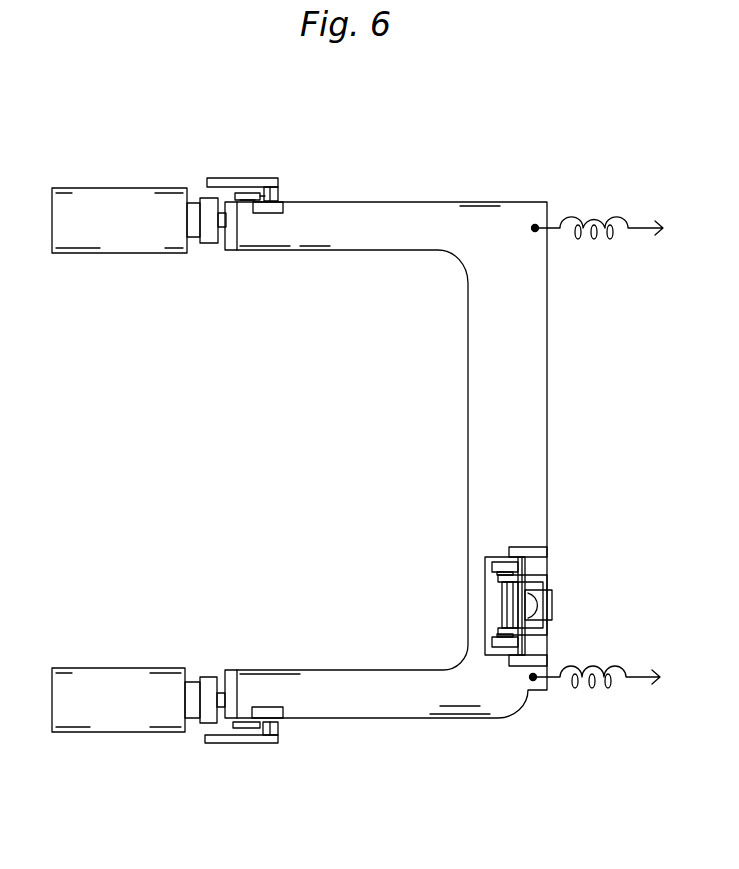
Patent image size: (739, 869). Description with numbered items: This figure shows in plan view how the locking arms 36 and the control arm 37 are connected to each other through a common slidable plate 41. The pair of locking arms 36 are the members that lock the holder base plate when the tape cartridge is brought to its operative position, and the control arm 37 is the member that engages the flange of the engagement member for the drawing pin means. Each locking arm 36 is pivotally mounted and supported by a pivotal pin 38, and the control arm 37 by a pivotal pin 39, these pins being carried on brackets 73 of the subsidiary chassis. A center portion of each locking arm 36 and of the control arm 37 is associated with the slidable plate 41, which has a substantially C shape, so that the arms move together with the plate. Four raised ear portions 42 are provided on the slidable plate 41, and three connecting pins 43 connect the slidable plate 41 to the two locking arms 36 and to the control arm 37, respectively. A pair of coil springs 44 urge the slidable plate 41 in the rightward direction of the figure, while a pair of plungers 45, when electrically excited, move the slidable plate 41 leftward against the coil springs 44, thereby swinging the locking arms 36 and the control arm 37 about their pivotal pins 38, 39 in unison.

The locking arm 36 is at (220, 180).
The control arm 37 is at (552, 602).
The pivotal pin 38 is at (252, 192).
The pivotal pin 39 is at (505, 621).
The slidable plate 41 is at (543, 412).
The raised ear portion 42 is at (270, 207).
The connecting pin 43 is at (268, 190).
The coil spring 44 is at (602, 220).
The plunger 45 is at (133, 240).
The bracket 73 is at (243, 197).